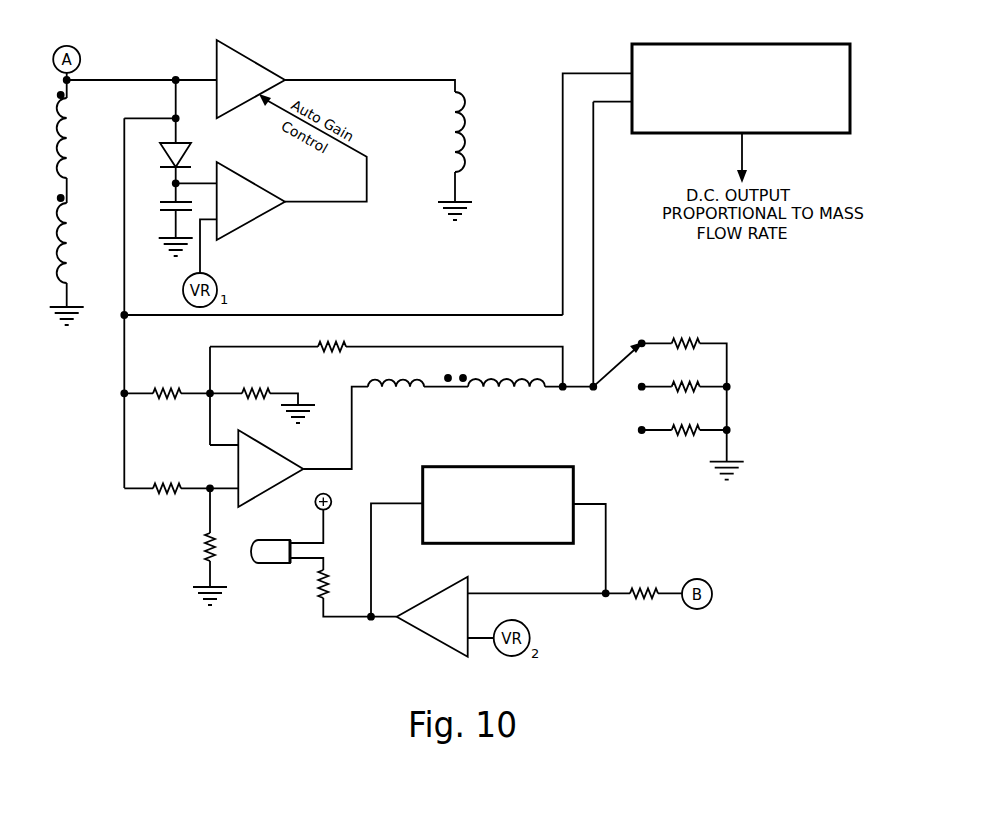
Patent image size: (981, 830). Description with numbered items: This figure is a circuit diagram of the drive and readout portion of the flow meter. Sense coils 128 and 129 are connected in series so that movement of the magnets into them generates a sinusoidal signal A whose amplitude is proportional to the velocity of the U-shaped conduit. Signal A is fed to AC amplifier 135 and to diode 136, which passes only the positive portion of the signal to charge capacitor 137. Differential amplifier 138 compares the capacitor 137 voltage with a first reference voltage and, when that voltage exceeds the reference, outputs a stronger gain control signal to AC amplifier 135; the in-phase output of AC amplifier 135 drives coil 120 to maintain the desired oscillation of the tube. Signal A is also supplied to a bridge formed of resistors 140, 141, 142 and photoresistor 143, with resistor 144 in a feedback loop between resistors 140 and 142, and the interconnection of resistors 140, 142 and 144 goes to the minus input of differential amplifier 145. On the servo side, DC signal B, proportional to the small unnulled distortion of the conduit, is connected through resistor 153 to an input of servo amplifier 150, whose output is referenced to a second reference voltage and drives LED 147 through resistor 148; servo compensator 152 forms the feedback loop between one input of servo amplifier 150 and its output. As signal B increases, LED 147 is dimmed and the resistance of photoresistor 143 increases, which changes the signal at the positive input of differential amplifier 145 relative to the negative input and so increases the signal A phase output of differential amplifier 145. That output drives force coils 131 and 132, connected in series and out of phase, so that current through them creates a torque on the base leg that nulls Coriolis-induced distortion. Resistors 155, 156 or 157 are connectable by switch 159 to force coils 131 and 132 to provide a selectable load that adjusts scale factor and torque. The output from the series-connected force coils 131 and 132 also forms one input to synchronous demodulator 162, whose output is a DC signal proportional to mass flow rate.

The coil 120 is at (467, 142).
The sense coil 128 is at (68, 247).
The sense coil 129 is at (75, 133).
The force coil 131 is at (422, 390).
The force coil 132 is at (540, 390).
The AC amplifier 135 is at (247, 53).
The diode 136 is at (190, 145).
The capacitor 137 is at (163, 200).
The differential amplifier 138 is at (262, 186).
The resistor 140 is at (168, 390).
The resistor 141 is at (168, 484).
The resistor 142 is at (256, 391).
The photoresistor 143 is at (208, 545).
The resistor 144 is at (345, 347).
The differential amplifier 145 is at (291, 463).
The LED 147 is at (275, 540).
The resistor 148 is at (320, 590).
The servo amplifier 150 is at (413, 632).
The servo compensator 152 is at (422, 467).
The resistor 153 is at (645, 598).
The resistor 155 is at (665, 432).
The resistor 156 is at (665, 389).
The resistor 157 is at (690, 343).
The switch 159 is at (622, 361).
The synchronous demodulator 162 is at (632, 45).